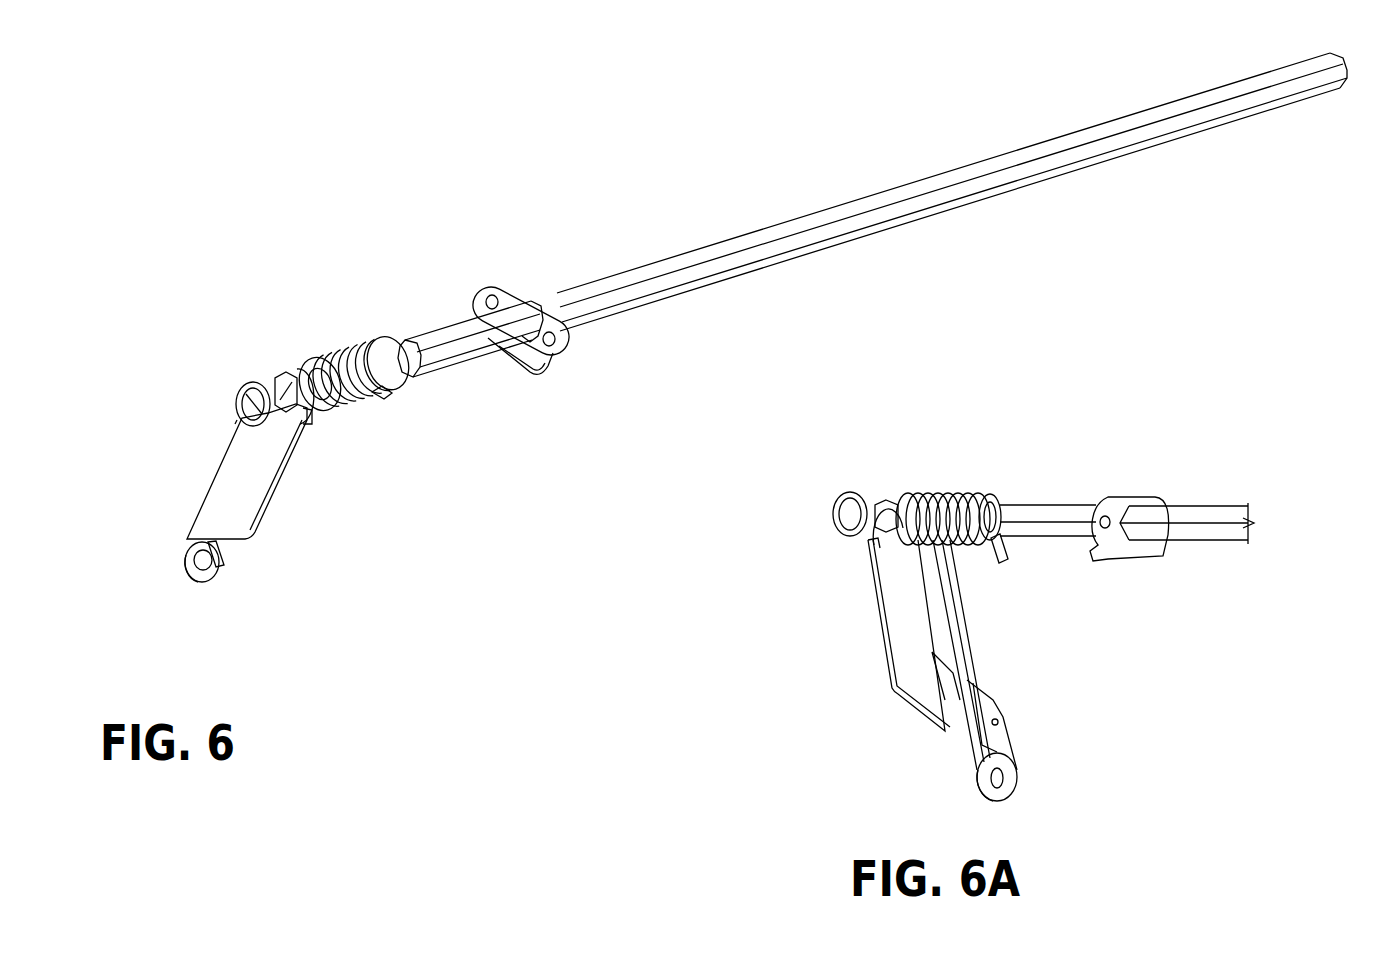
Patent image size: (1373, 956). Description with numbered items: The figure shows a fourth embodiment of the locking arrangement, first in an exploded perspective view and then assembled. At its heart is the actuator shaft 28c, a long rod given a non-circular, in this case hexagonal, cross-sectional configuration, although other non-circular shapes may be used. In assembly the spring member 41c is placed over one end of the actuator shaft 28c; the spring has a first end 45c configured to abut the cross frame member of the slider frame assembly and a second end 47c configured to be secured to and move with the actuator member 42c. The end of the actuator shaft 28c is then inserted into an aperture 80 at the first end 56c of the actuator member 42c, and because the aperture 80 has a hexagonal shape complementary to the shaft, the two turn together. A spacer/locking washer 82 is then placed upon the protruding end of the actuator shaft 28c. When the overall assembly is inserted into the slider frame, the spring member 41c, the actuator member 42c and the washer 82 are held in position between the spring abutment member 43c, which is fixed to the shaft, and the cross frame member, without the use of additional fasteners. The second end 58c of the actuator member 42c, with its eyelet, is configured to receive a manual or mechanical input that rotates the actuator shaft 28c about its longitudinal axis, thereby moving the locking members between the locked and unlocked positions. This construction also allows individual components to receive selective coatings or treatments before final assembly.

In FIG. 6, the actuator shaft 28c is at (745, 238).
In FIG. 6A, the actuator shaft 28c is at (1200, 517).
In FIG. 6, the spring member 41c is at (346, 356).
In FIG. 6A, the spring member 41c is at (962, 505).
In FIG. 6, the actuator member 42c is at (270, 497).
In FIG. 6A, the actuator member 42c is at (888, 663).
In FIG. 6, the spring abutment member 43c is at (508, 290).
In FIG. 6A, the spring abutment member 43c is at (1110, 503).
In FIG. 6, the first end of spring member 45c is at (385, 393).
In FIG. 6A, the first end of spring member 45c is at (1002, 555).
In FIG. 6, the second end of spring member 47c is at (212, 553).
In FIG. 6A, the second end of spring member 47c is at (955, 647).
In FIG. 6, the first end of actuator member 56c is at (307, 420).
In FIG. 6A, the first end of actuator member 56c is at (868, 547).
In FIG. 6, the second end of actuator member 58c is at (185, 547).
In FIG. 6A, the second end of actuator member 58c is at (1016, 782).
In FIG. 6, the aperture 80 is at (280, 385).
In FIG. 6A, the aperture 80 is at (882, 508).
In FIG. 6, the spacer/locking washer 82 is at (243, 398).
In FIG. 6A, the spacer/locking washer 82 is at (832, 520).